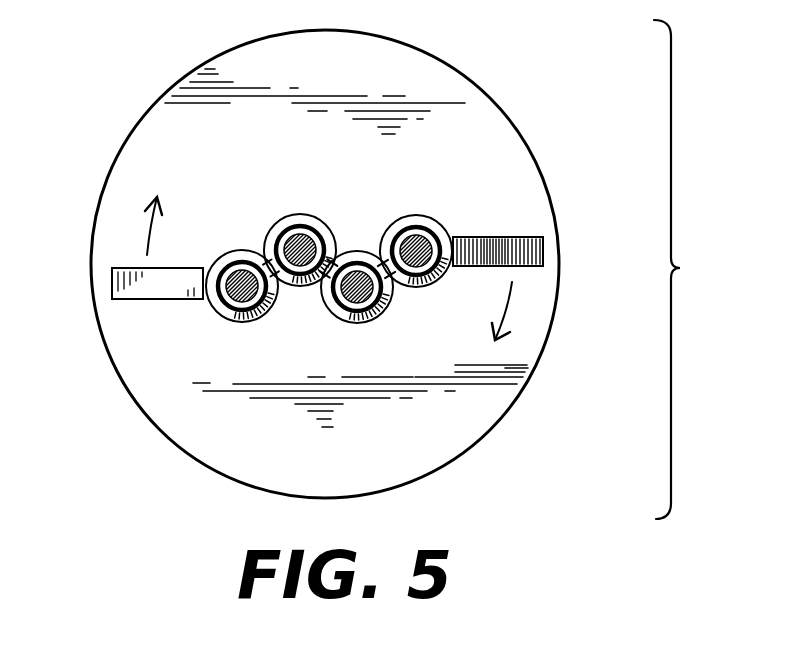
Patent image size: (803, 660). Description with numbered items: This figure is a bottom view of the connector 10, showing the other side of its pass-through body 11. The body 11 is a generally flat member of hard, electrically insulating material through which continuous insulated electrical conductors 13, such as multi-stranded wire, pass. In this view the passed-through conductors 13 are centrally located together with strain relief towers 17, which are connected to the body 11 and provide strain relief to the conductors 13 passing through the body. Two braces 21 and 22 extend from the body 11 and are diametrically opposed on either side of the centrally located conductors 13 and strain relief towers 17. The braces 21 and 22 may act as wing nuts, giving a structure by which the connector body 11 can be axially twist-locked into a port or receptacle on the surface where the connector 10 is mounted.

The connector 10 is at (684, 269).
The body 11 is at (481, 89).
The insulated electrical conductors 13 is at (329, 246).
The strain relief towers 17 is at (302, 217).
The brace 21 is at (503, 243).
The brace 22 is at (158, 290).